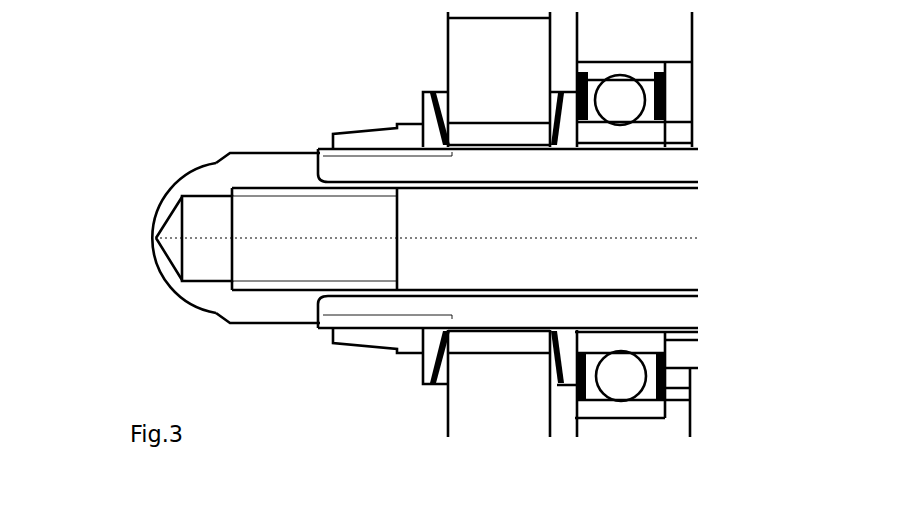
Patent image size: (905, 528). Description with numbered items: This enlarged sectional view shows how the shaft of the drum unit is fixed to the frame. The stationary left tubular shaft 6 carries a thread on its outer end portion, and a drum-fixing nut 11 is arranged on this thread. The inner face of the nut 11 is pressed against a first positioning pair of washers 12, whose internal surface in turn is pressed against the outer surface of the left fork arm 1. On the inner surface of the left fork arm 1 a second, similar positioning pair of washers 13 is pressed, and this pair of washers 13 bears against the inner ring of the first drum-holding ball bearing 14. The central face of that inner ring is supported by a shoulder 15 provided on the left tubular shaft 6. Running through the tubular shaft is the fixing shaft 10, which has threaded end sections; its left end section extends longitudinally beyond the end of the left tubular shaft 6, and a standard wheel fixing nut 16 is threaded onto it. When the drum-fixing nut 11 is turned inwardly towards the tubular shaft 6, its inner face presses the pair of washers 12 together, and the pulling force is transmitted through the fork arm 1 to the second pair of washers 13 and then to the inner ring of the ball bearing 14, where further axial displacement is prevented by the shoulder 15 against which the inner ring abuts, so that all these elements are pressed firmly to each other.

The left fork arm 1 is at (478, 78).
The left tubular shaft 6 is at (670, 163).
The fixing shaft 10 is at (262, 215).
The drum-fixing nut 11 is at (348, 332).
The first positioning pair of washers 12 is at (432, 357).
The second positioning pair of washers 13 is at (557, 378).
The drum-holding ball bearing 14 is at (637, 65).
The shoulder 15 is at (638, 133).
The standard wheel fixing nut 16 is at (177, 293).